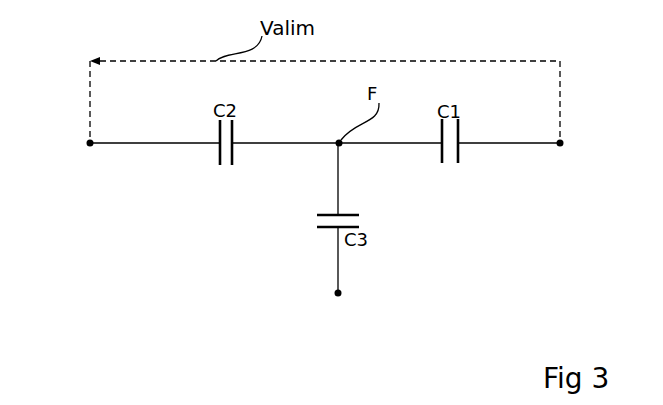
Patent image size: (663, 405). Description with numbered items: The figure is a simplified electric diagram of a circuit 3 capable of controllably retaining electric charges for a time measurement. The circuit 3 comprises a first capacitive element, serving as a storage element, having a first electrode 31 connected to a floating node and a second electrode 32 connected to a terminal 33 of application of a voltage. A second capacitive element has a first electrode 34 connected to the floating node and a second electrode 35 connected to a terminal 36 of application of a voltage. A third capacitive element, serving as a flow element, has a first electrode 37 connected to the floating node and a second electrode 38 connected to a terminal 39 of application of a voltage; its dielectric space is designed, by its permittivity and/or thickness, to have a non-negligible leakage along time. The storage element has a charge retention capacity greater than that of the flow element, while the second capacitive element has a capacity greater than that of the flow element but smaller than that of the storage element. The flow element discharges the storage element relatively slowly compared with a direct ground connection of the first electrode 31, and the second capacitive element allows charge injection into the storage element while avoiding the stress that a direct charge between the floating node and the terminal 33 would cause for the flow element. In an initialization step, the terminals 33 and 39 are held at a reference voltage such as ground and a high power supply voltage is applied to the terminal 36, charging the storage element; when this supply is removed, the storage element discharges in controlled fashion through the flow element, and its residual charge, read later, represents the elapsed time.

The circuit 3 is at (112, 296).
The first electrode 31 is at (440, 158).
The second electrode 32 is at (460, 158).
The terminal 33 is at (558, 146).
The first electrode 34 is at (233, 156).
The second electrode 35 is at (219, 156).
The terminal 36 is at (88, 147).
The first electrode 37 is at (352, 212).
The second electrode 38 is at (320, 228).
The terminal 39 is at (342, 293).